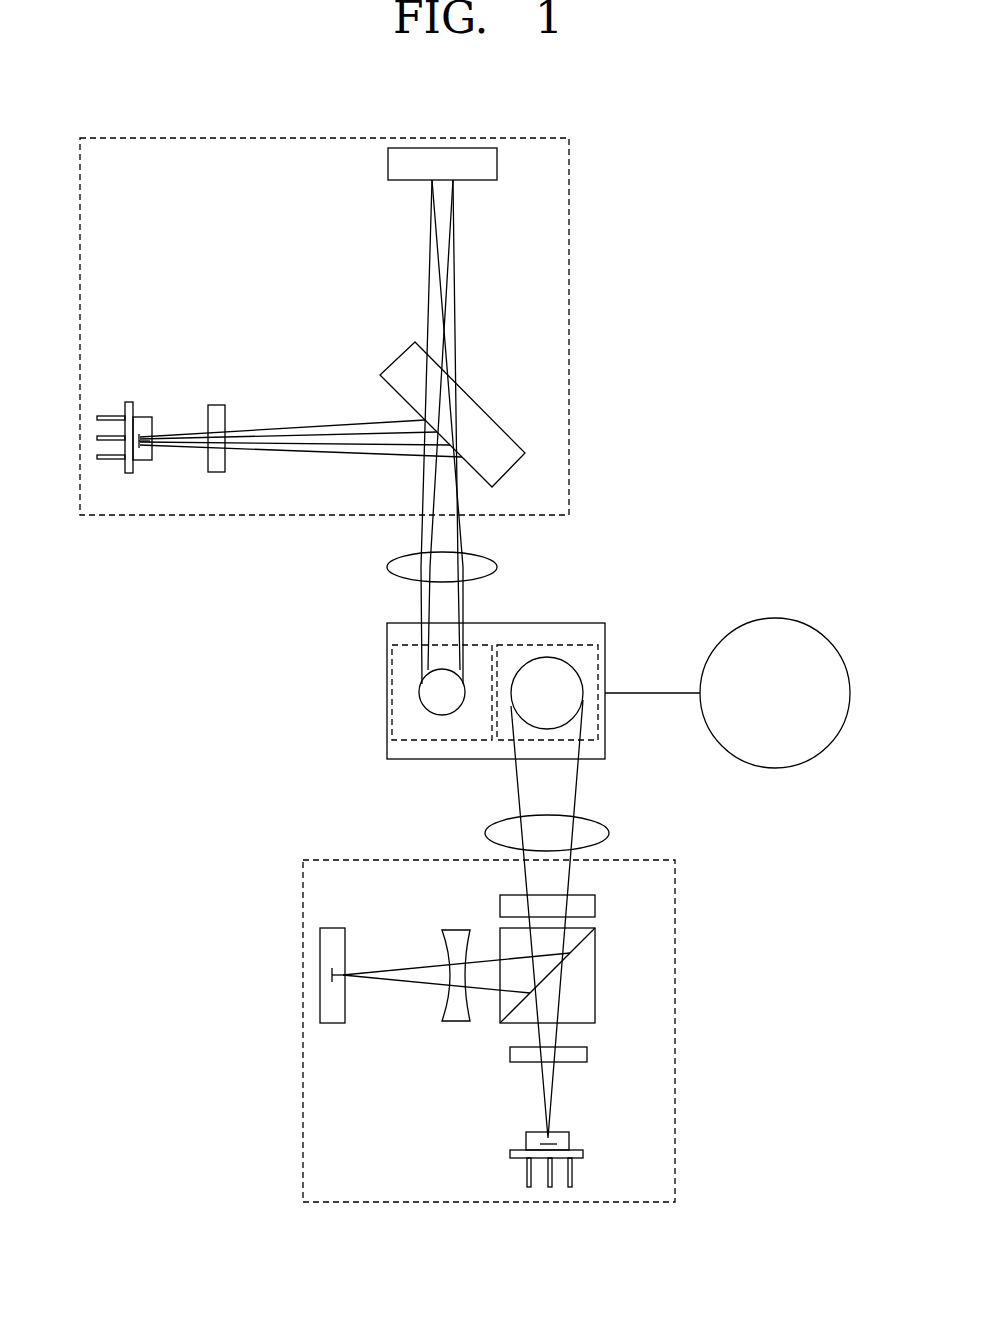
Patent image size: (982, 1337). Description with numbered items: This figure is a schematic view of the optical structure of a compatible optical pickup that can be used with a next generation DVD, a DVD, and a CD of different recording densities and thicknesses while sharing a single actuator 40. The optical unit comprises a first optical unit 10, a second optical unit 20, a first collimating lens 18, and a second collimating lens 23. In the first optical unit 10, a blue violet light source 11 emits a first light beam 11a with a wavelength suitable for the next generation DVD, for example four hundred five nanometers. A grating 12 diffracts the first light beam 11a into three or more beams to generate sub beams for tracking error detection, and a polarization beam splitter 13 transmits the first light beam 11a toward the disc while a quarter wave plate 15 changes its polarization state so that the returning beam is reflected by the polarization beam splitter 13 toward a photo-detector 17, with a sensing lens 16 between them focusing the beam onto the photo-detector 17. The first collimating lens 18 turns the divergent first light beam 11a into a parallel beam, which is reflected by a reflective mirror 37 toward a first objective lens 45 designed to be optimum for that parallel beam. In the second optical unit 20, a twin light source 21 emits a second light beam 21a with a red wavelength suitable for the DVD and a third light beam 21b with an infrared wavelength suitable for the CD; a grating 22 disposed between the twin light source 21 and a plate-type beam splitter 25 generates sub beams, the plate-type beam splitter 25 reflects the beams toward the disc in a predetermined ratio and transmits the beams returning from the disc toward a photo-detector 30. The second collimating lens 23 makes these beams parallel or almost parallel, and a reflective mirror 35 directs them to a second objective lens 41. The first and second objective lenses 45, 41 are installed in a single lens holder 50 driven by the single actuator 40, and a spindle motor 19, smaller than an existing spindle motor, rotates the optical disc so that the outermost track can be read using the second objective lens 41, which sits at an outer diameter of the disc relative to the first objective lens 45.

The first optical unit 10 is at (675, 1032).
The blue violet light source 11 is at (492, 1154).
The first light beam 11a is at (535, 1080).
The grating 12 is at (590, 1054).
The polarization beam splitter 13 is at (597, 988).
The quarter wave plate 15 is at (597, 905).
The sensing lens 16 is at (455, 930).
The photo-detector 17 is at (332, 928).
The first collimating lens 18 is at (610, 832).
The spindle motor 19 is at (776, 618).
The second optical unit 20 is at (569, 295).
The twin light source 21 is at (128, 385).
The second light beam 21a is at (180, 435).
The third light beam 21b is at (182, 446).
The grating 22 is at (216, 405).
The second collimating lens 23 is at (387, 567).
The plate-type beam splitter 25 is at (482, 417).
The photo-detector 30 is at (388, 165).
The reflective mirror 35 is at (425, 742).
The reflective mirror 37 is at (598, 718).
The actuator 40 is at (477, 688).
The second objective lens 41 is at (428, 700).
The first objective lens 45 is at (567, 675).
The lens holder 50 is at (578, 623).